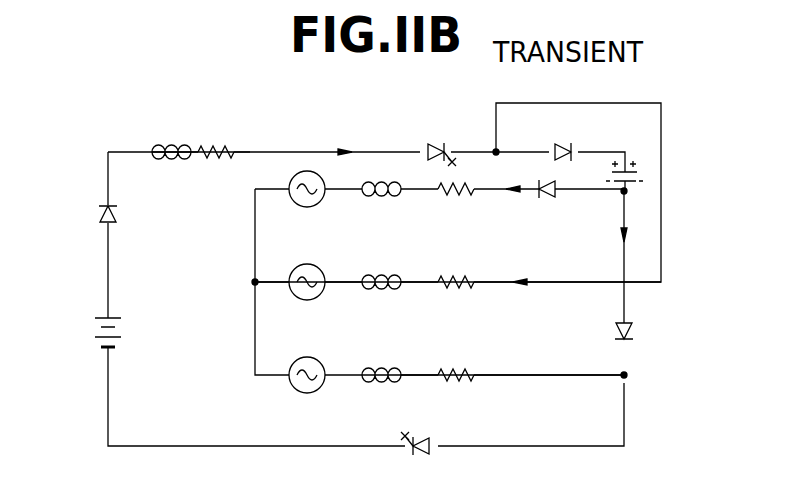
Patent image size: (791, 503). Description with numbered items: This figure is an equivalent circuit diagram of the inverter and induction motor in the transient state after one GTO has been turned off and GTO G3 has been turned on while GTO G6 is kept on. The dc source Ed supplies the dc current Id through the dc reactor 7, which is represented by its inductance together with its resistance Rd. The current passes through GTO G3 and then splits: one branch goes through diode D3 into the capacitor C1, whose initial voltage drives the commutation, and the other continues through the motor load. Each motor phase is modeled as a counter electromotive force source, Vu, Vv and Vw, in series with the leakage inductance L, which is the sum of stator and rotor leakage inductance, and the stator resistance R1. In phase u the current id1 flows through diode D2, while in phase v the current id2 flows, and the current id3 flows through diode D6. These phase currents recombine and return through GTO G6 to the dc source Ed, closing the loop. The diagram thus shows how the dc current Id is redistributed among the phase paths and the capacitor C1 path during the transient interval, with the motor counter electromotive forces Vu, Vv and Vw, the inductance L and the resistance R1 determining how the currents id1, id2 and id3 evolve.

The dc reactor 7 is at (146, 146).
The resistance of dc reactor Rd is at (217, 146).
The dc current Id is at (342, 139).
The GTO G3 is at (438, 146).
The diode D3 is at (566, 145).
The capacitor C1 is at (630, 172).
The diode D2 is at (552, 198).
The diode D6 is at (633, 325).
The GTO G6 is at (418, 453).
The dc source Ed is at (96, 324).
The motor counter electromotive force of phase u Vu is at (320, 213).
The motor counter electromotive force of phase v Vv is at (320, 307).
The motor counter electromotive force of phase w Vw is at (320, 398).
The leakage inductance L is at (380, 197).
The induction motor stator resistance R1 is at (454, 197).
The current flowing through phase u id1 is at (511, 204).
The current flowing through phase v id2 is at (523, 296).
The current flowing through diode D6 id3 is at (610, 235).